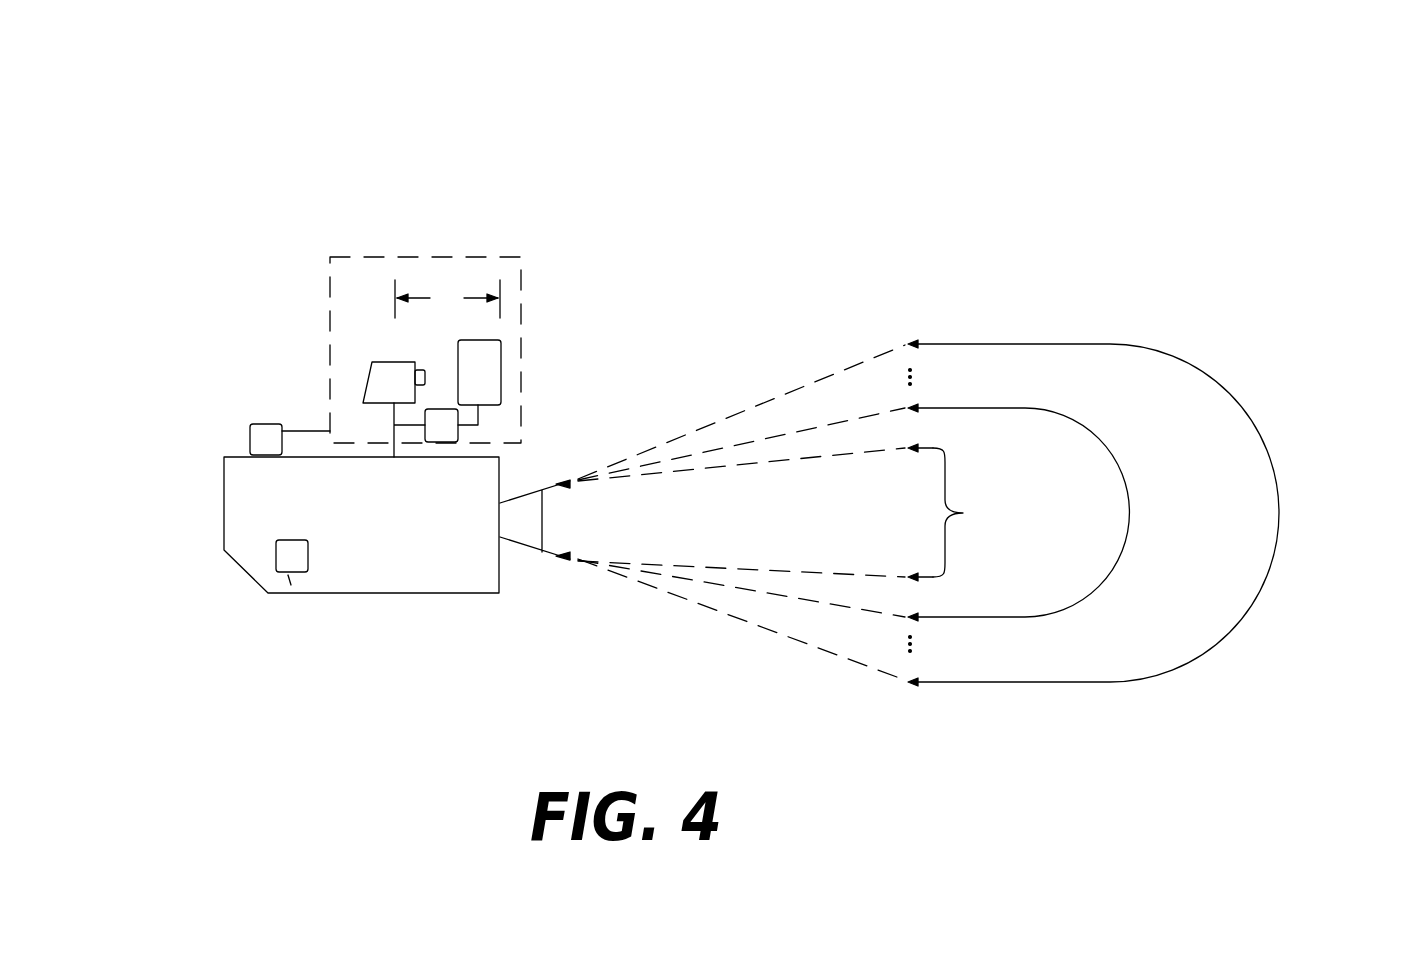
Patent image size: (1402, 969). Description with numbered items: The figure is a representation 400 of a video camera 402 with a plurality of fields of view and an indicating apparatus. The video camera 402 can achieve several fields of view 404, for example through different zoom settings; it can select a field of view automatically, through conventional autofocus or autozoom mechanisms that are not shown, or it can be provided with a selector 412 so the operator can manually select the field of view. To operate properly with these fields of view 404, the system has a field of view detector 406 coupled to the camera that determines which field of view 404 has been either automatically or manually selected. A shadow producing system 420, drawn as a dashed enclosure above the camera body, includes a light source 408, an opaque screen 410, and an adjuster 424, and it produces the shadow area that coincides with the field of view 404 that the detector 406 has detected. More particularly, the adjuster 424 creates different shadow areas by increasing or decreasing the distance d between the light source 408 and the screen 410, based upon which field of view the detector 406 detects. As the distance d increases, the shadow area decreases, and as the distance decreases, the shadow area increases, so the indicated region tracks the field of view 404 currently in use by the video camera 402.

The image capture system 400 is at (1272, 147).
The video camera 402 is at (355, 593).
The fields of view 404 is at (1309, 513).
The field of view detector 406 is at (250, 437).
The light source 408 is at (372, 362).
The opaque screen 410 is at (501, 365).
The selector 412 is at (290, 593).
The shadow producing system 420 is at (521, 257).
The adjuster 424 is at (465, 433).